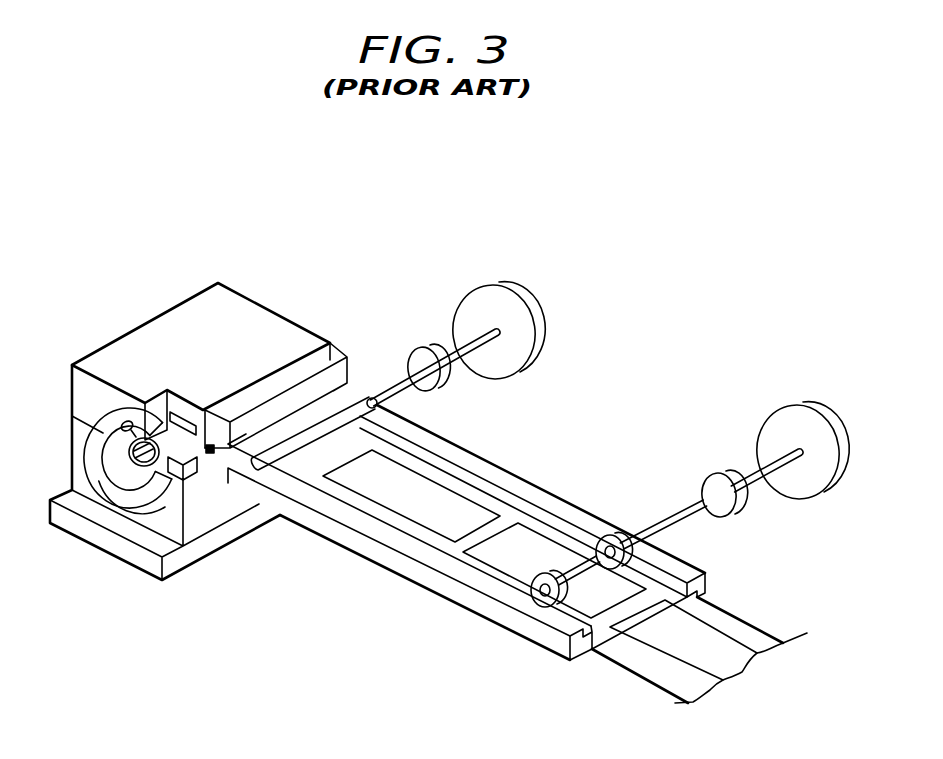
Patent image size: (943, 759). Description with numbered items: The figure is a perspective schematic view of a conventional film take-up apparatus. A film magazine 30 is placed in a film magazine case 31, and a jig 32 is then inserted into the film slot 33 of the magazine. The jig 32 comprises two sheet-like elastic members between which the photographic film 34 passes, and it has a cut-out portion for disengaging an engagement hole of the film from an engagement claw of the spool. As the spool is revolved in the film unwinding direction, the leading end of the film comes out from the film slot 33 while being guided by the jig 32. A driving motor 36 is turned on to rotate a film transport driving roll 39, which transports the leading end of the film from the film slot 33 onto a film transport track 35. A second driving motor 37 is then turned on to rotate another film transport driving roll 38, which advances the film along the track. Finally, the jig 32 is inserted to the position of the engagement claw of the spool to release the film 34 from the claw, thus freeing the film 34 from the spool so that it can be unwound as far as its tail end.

The film magazine 30 is at (95, 440).
The film magazine case 31 is at (100, 500).
The jig 32 is at (270, 422).
The film slot 33 is at (210, 455).
The photographic film 34 is at (655, 684).
The film transport track 35 is at (527, 495).
The driving motor 36 is at (525, 300).
The driving motor 37 is at (835, 425).
The film transport driving roll 38 is at (614, 537).
The film transport driving roll 39 is at (263, 460).